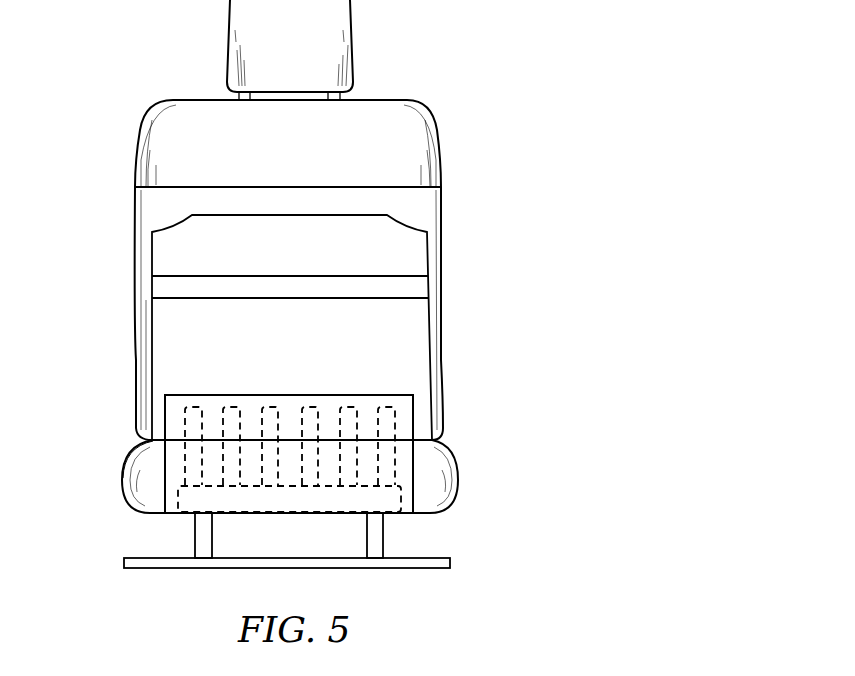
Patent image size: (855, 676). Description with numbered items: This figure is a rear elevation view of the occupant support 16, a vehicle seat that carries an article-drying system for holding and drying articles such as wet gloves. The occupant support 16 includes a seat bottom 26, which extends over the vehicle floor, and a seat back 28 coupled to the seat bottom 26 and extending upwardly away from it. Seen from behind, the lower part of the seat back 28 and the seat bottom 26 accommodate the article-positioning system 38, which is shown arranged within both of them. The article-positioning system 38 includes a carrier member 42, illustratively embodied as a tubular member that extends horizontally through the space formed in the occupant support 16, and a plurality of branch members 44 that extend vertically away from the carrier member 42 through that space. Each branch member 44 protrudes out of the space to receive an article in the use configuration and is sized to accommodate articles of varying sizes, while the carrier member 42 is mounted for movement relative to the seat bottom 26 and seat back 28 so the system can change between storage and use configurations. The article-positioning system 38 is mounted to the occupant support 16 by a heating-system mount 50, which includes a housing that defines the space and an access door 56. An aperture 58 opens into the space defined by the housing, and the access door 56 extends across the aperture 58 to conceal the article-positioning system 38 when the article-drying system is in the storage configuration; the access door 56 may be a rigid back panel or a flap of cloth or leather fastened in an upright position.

The occupant support 16 is at (452, 90).
The seat back 28 is at (110, 170).
The seat bottom 26 is at (108, 495).
The access door 56 is at (165, 458).
The heating-system mount 50 is at (415, 422).
The aperture 58 is at (163, 410).
The carrier member 42 is at (415, 478).
The branch member 44 is at (352, 404).
The article-positioning system 38 is at (246, 513).